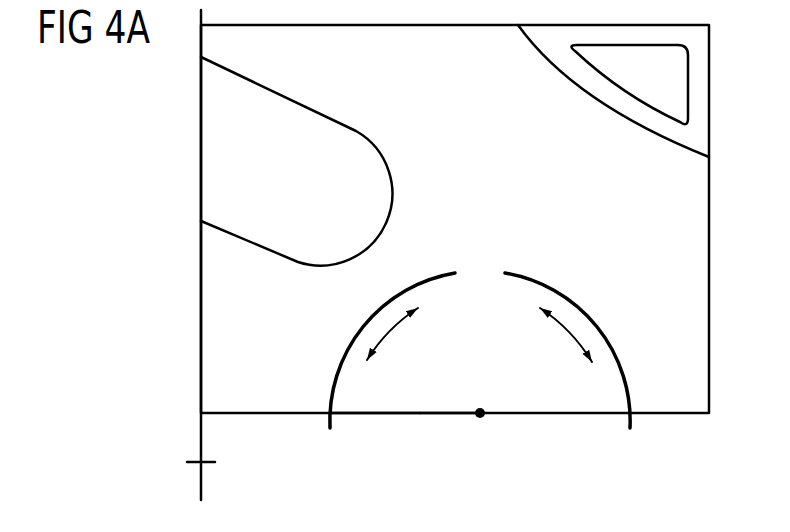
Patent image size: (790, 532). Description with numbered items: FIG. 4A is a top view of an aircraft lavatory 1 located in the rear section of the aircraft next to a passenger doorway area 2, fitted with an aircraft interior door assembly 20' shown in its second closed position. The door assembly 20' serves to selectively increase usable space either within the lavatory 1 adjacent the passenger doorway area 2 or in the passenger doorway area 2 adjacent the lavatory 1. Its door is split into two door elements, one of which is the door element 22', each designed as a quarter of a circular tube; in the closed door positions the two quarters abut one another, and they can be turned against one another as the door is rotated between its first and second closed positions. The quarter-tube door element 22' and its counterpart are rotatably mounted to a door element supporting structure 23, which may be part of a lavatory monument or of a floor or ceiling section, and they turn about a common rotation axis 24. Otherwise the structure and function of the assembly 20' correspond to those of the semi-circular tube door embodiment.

The lavatory 1 is at (514, 172).
The passenger doorway area 2 is at (521, 526).
The aircraft interior door assembly 20' is at (369, 461).
The door element 22' is at (381, 350).
The door element supporting structure 23 is at (457, 418).
The rotation axis 24 is at (480, 408).